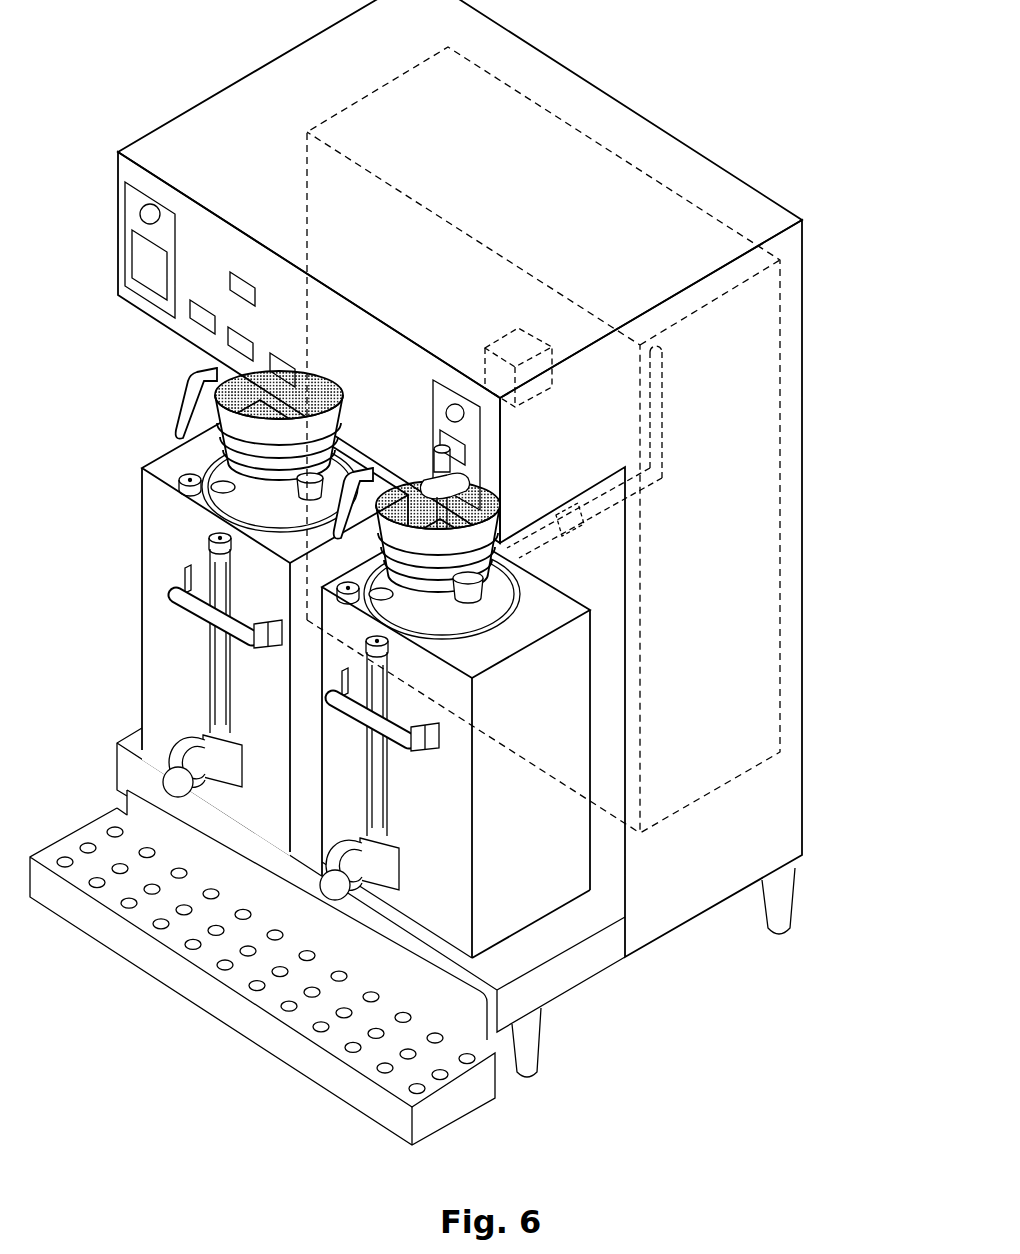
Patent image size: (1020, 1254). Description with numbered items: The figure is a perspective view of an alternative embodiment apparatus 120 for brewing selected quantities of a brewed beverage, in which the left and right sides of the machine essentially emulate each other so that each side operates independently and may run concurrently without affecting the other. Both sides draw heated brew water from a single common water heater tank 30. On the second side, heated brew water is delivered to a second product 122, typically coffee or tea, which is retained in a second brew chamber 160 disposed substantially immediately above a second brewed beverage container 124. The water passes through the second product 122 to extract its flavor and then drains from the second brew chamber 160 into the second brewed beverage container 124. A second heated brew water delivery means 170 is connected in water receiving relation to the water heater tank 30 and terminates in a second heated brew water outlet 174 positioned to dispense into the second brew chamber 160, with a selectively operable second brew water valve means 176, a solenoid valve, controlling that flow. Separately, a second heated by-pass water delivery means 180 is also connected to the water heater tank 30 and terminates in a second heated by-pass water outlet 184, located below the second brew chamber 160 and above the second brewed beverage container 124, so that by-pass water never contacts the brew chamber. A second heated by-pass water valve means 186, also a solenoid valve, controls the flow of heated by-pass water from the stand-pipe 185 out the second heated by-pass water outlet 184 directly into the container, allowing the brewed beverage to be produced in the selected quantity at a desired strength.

The alternative embodiment apparatus 120 is at (790, 160).
The water heater tank 30 is at (768, 401).
The second product 122 is at (390, 467).
The second brewed beverage container 124 is at (572, 742).
The second brew chamber 160 is at (430, 578).
The second heated brew water delivery means 170 is at (528, 252).
The second heated brew water outlet 174 is at (428, 462).
The second brew water valve means 176 is at (507, 342).
The second heated by-pass water delivery means 180 is at (632, 461).
The second heated by-pass water outlet 184 is at (514, 548).
The stand-pipe 185 is at (657, 378).
The second heated by-pass water valve means 186 is at (580, 524).